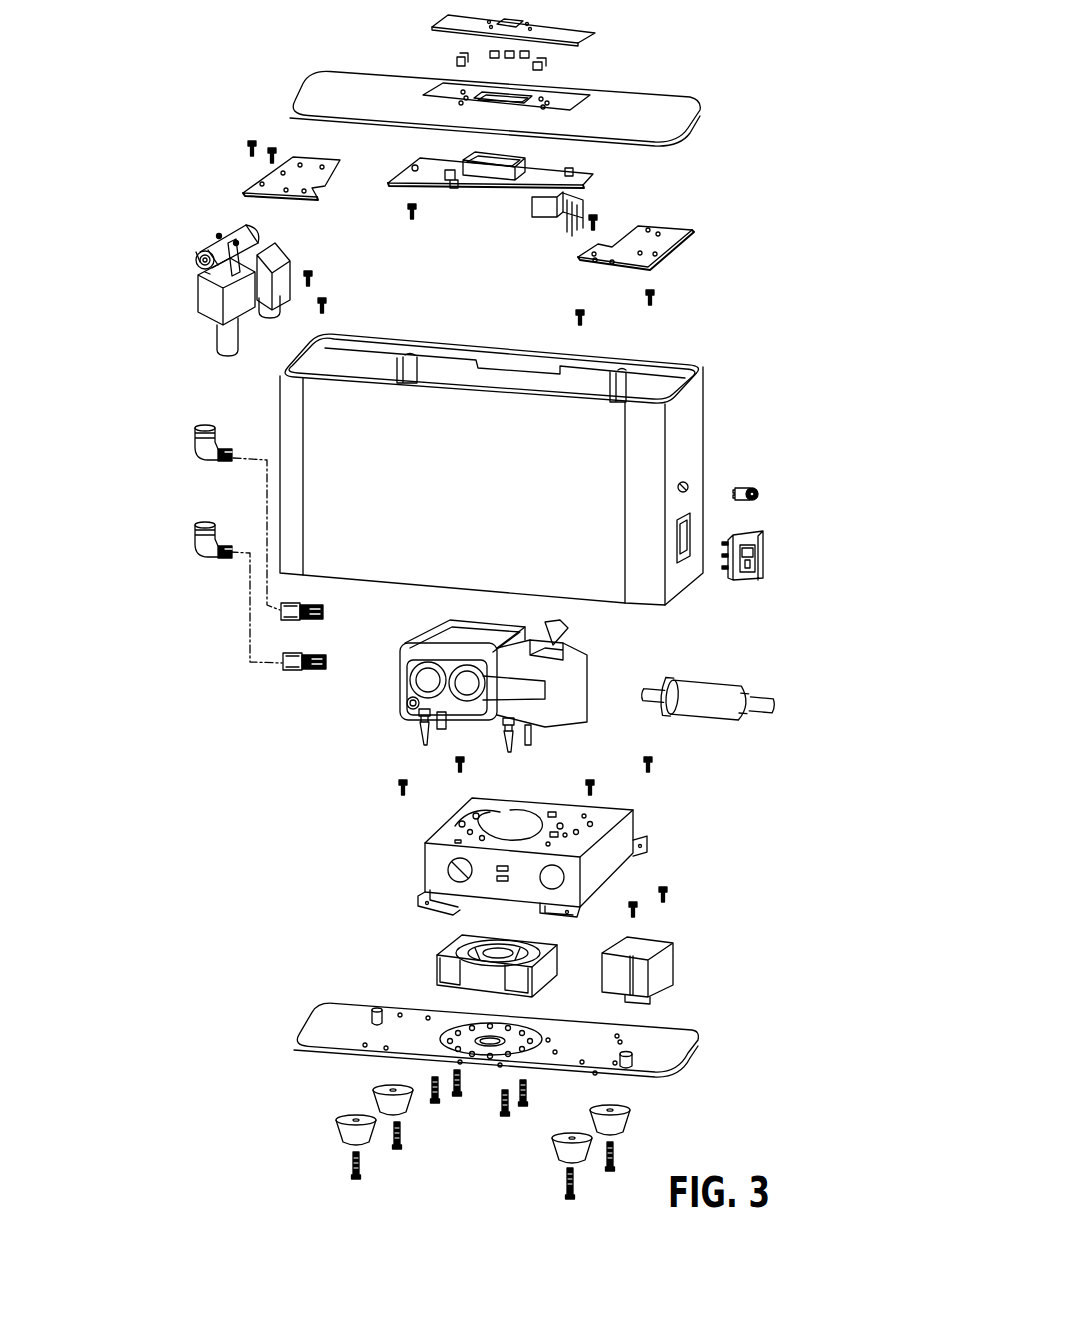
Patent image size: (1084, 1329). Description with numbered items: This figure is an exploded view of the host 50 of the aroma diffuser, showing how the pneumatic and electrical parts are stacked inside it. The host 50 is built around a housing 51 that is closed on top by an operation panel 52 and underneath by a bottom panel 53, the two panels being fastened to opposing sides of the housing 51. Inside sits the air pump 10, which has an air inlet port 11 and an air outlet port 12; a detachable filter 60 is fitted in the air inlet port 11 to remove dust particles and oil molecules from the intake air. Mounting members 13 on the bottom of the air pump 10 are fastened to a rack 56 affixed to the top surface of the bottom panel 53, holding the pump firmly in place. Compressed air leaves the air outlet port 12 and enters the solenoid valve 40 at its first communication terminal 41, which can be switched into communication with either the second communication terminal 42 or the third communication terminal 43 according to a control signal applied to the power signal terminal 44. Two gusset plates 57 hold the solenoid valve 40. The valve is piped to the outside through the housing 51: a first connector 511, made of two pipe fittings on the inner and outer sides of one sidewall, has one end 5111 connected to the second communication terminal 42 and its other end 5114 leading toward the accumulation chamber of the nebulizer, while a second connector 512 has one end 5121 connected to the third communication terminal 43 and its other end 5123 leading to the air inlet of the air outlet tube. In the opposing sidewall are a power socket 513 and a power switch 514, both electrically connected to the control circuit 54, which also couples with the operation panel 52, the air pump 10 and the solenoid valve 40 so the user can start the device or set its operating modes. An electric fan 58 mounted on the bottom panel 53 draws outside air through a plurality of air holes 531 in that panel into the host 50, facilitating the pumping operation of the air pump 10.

The air pump 10 is at (400, 688).
The air inlet port 11 is at (410, 710).
The air outlet port 12 is at (537, 623).
The mounting member 13 is at (513, 747).
The solenoid valve 40 is at (228, 217).
The first communication terminal 41 is at (198, 257).
The second communication terminal 42 is at (245, 235).
The third communication terminal 43 is at (225, 335).
The power signal terminal 44 is at (272, 307).
The host 50 is at (831, 1).
The housing 51 is at (688, 430).
The first connector 511 is at (290, 687).
The one end of first connector 5111 is at (328, 663).
The other end of first connector 5114 is at (202, 520).
The second connector 512 is at (307, 610).
The one end of second connector 5121 is at (323, 612).
The other end of second connector 5123 is at (203, 427).
The power socket 513 is at (753, 573).
The power switch 514 is at (743, 485).
The operation panel 52 is at (578, 27).
The bottom panel 53 is at (665, 1045).
The air holes 531 is at (490, 1048).
The control circuit 54 is at (563, 168).
The rack 56 is at (617, 843).
The gusset plates 57 is at (290, 160).
The electric fan 58 is at (453, 950).
The filter 60 is at (695, 697).